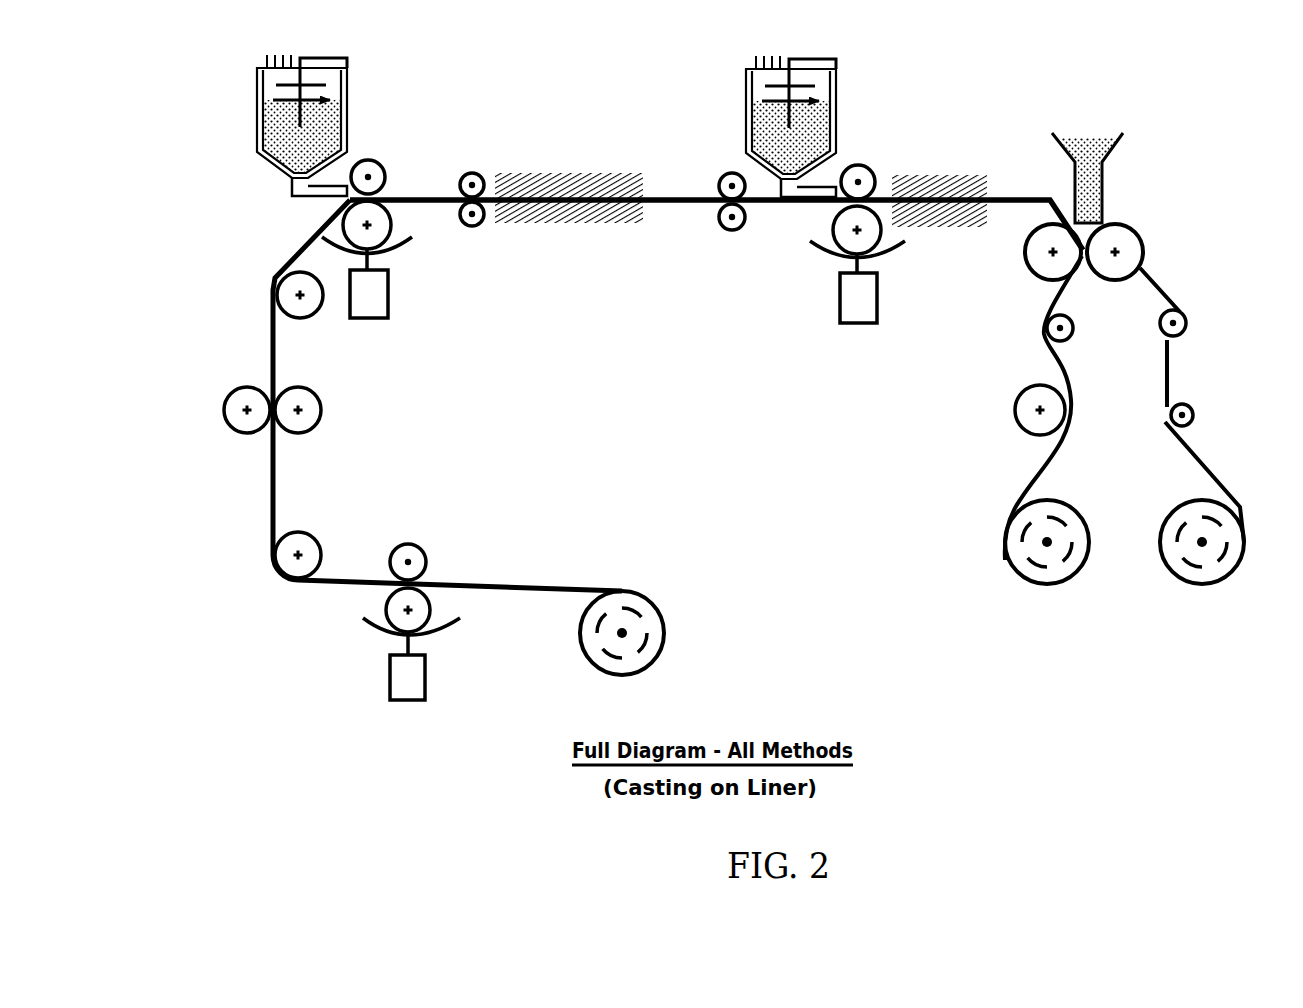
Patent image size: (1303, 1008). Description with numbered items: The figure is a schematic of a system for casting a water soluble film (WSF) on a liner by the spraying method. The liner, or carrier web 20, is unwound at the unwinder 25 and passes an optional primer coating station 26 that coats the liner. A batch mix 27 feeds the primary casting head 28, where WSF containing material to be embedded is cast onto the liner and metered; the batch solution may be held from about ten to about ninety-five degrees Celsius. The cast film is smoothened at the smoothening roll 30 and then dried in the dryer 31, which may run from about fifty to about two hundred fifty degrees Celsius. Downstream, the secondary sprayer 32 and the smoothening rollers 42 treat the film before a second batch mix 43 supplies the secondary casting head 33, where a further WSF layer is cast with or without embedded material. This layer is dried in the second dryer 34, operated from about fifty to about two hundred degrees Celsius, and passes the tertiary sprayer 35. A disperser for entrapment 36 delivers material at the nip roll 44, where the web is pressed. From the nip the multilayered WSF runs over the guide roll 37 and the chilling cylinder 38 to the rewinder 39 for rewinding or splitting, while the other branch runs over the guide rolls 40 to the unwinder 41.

The liner web 20 is at (438, 208).
The unwinder 25 is at (684, 627).
The primer coating 26 is at (361, 637).
The batch mix 27 is at (273, 125).
The primary casting head 28 is at (367, 216).
The smoothening roll 30 is at (486, 236).
The dryer 31 is at (637, 234).
The secondary sprayer 32 is at (684, 208).
The secondary casting head 33 is at (855, 325).
The dryer 34 is at (960, 238).
The tertiary sprayer 35 is at (1012, 169).
The disperser for entrapment 36 is at (1126, 147).
The guide roll 37 is at (1035, 337).
The chilling cylinder 38 is at (1013, 442).
The rewinder 39 is at (1049, 594).
The guide rolls 40 is at (1203, 322).
The unwinder 41 is at (1210, 594).
The smoothening rollers 42 is at (731, 215).
The batch mix 43 is at (812, 126).
The nip roll 44 is at (1105, 252).